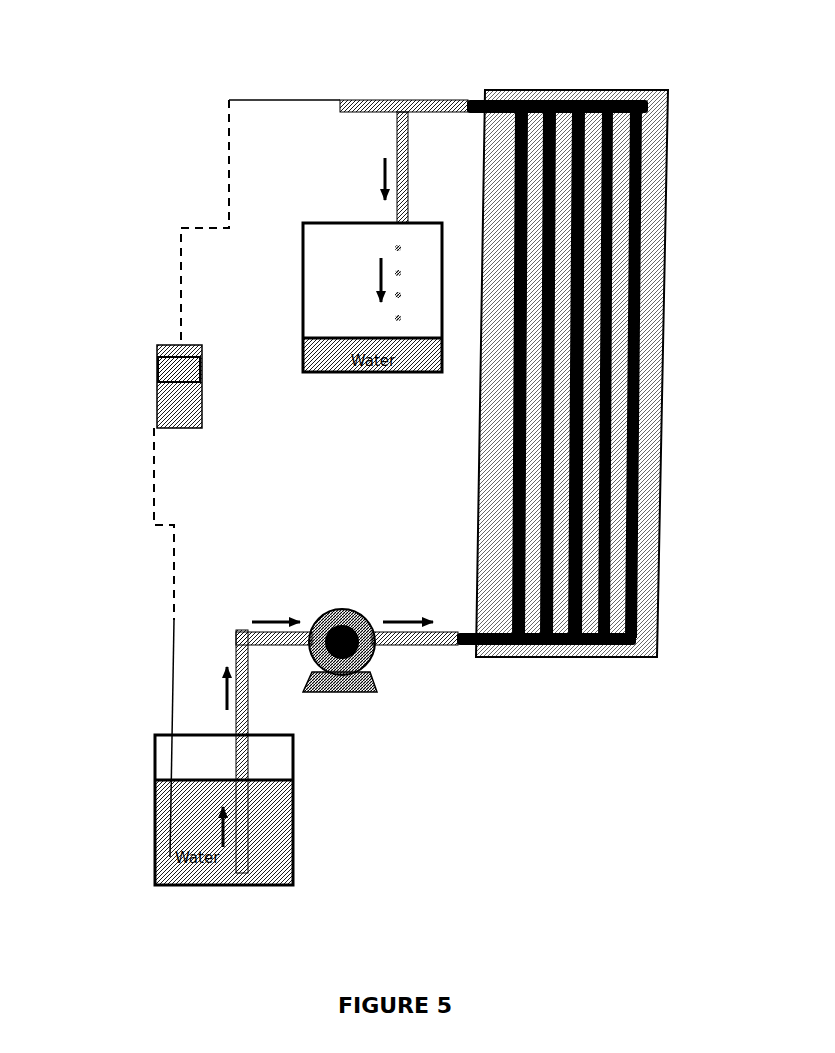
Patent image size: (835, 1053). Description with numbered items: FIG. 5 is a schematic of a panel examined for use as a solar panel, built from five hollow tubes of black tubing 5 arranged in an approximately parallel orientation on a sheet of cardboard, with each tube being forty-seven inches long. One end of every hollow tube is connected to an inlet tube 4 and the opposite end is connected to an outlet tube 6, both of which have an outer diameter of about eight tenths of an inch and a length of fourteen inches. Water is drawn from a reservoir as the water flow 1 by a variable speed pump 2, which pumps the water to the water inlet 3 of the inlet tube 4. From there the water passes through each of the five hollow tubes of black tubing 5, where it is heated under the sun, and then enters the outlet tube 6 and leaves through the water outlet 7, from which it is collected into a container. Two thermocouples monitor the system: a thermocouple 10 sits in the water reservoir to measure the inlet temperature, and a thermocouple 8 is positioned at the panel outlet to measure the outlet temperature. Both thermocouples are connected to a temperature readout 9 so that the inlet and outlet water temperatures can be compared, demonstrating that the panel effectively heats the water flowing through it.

The water flow 1 is at (254, 713).
The variable speed pump 2 is at (340, 597).
The water inlet 3 is at (415, 675).
The inlet tube 4 is at (548, 648).
The black tubing 5 is at (642, 326).
The outlet tube 6 is at (600, 100).
The water outlet 7 is at (404, 120).
The thermocouple 8 is at (292, 98).
The temperature readout 9 is at (113, 387).
The thermocouple 10 is at (160, 698).